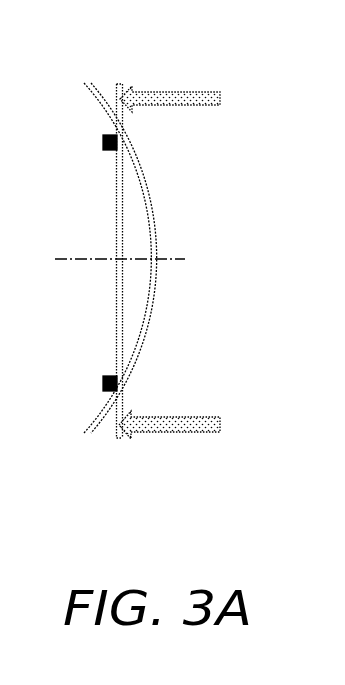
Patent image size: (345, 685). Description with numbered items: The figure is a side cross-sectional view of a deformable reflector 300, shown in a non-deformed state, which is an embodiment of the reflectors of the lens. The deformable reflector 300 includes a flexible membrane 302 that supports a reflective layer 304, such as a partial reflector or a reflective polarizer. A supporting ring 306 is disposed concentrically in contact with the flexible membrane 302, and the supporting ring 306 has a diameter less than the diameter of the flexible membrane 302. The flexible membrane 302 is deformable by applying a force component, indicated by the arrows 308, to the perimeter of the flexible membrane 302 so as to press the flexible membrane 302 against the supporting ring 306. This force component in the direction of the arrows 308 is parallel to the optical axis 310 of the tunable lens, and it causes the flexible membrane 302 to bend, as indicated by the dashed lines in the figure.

The deformable reflector 300 is at (296, 80).
The flexible membrane 302 is at (121, 188).
The reflective layer 304 is at (123, 227).
The supporting ring 306 is at (103, 143).
The arrows 308 is at (152, 92).
The optical axis 310 is at (155, 260).